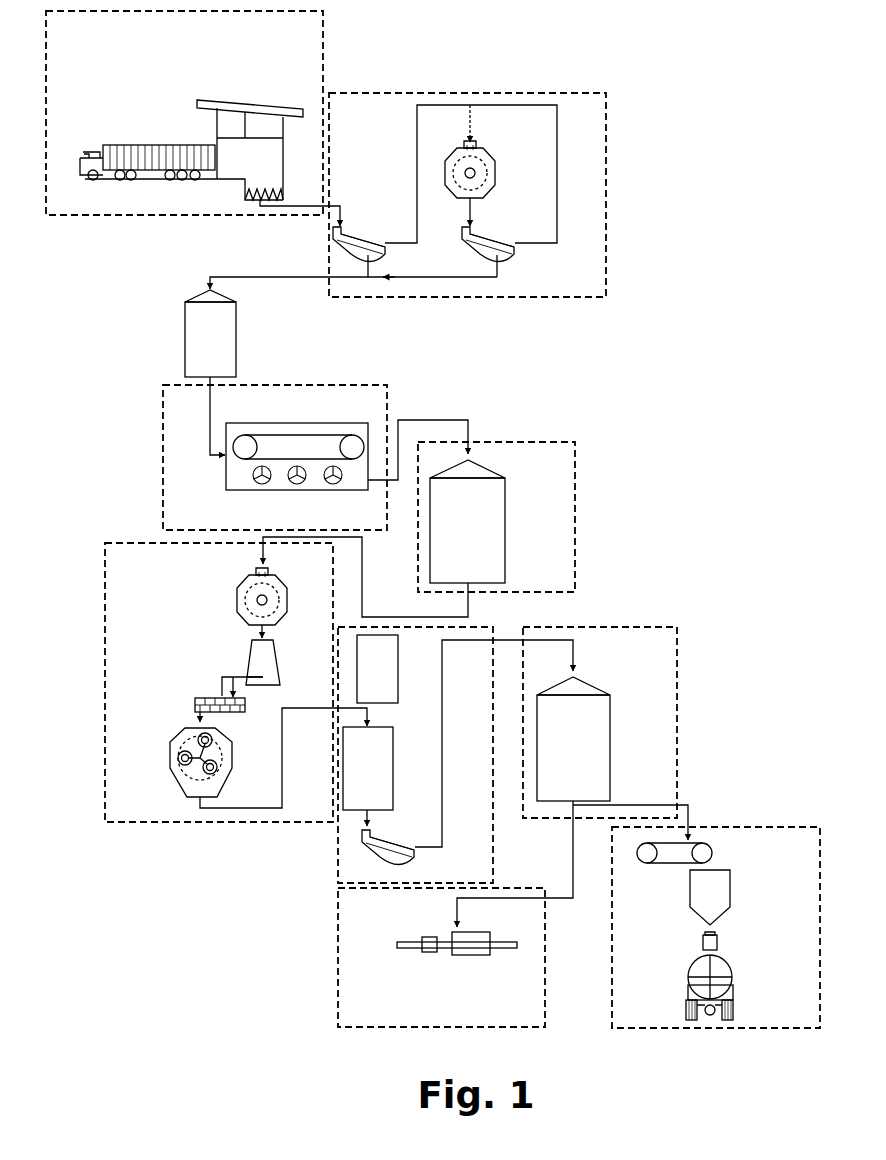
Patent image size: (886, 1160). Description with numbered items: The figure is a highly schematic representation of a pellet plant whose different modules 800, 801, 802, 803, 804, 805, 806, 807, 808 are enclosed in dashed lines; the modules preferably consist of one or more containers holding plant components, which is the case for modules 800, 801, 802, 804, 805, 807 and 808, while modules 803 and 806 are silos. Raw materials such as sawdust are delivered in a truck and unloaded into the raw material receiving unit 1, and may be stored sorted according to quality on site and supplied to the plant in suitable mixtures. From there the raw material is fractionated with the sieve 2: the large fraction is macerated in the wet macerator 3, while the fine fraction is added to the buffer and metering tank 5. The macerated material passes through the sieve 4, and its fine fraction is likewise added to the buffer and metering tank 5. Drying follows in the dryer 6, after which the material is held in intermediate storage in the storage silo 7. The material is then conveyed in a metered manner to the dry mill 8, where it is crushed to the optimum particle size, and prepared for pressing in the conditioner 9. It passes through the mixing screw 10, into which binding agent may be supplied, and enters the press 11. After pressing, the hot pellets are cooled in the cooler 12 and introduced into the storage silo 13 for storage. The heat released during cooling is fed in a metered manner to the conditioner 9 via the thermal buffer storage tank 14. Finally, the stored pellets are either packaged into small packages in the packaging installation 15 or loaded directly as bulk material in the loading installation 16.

The raw material receiving unit 1 is at (265, 163).
The sieve 2 is at (372, 252).
The wet macerator 3 is at (490, 160).
The sieve 4 is at (500, 250).
The buffer and metering tank 5 is at (220, 340).
The dryer 6 is at (333, 432).
The storage silo 7 is at (485, 530).
The dry mill 8 is at (238, 599).
The conditioner 9 is at (252, 660).
The mixing screw 10 is at (195, 703).
The press 11 is at (175, 779).
The cooler 12 is at (370, 778).
The storage silo 13 is at (600, 745).
The thermal buffer storage tank 14 is at (380, 675).
The packaging installation 15 is at (458, 956).
The loading installation 16 is at (718, 897).
The module 800 is at (102, 50).
The module 801 is at (382, 134).
The module 802 is at (322, 417).
The module 803 is at (562, 486).
The module 804 is at (160, 582).
The module 805 is at (485, 876).
The module 806 is at (667, 666).
The module 807 is at (529, 1016).
The module 808 is at (812, 864).